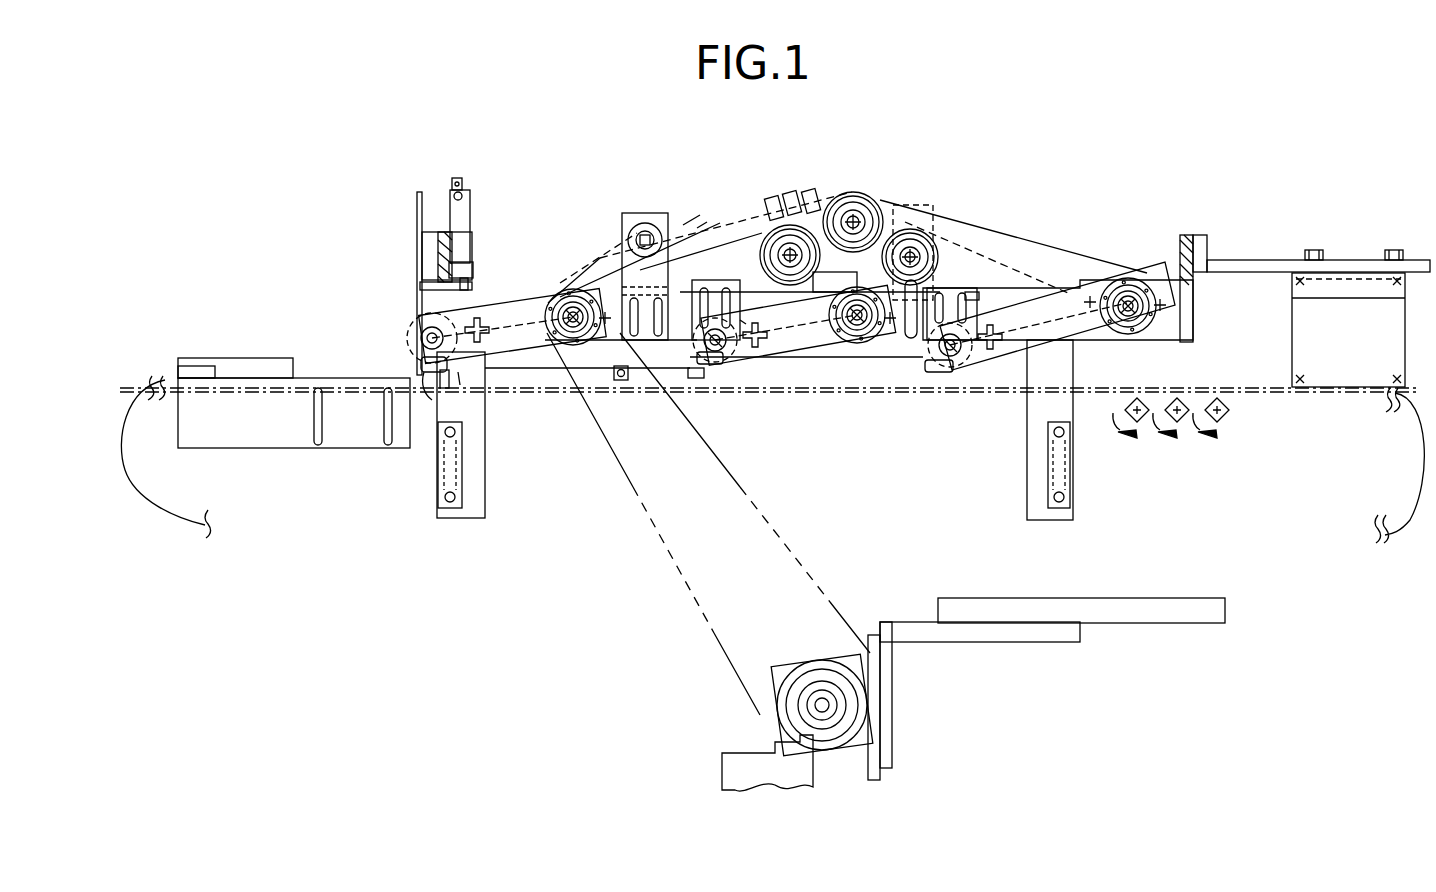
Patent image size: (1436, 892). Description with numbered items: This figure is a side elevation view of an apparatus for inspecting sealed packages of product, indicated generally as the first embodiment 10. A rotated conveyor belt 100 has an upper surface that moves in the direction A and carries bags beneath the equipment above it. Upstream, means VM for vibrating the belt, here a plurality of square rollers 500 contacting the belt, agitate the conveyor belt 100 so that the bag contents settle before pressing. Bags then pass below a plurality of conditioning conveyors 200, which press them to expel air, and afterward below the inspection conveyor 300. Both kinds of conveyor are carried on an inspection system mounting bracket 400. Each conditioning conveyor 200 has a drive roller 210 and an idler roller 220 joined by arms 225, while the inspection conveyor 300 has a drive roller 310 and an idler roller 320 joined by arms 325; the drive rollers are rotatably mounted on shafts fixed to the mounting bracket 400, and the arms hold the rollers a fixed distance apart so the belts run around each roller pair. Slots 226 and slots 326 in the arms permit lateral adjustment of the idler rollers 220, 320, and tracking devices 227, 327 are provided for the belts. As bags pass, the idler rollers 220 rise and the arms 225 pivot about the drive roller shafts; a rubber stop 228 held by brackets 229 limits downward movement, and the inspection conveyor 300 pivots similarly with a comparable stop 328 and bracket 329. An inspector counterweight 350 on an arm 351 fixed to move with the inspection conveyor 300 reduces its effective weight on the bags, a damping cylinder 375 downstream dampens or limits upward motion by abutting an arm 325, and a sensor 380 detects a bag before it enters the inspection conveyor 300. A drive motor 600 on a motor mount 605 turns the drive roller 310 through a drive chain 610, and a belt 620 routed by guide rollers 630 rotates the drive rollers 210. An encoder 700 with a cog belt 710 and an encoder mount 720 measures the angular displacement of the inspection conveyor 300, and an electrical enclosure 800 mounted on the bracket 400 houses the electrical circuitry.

The first embodiment apparatus 10 is at (842, 150).
The conveyor belt 100 is at (142, 463).
The conditioning conveyors 200 is at (770, 367).
The drive rollers 210 is at (857, 345).
The idler rollers 220 is at (697, 377).
The arms 225 is at (818, 332).
The slots 226 is at (728, 360).
The tracking devices 227 is at (745, 320).
The rubber stop 228 is at (710, 364).
The brackets 229 is at (697, 218).
The inspection conveyor 300 is at (512, 305).
The drive roller 310 is at (540, 312).
The idler roller 320 is at (412, 340).
The arms 325 is at (533, 333).
The slots 326 is at (430, 362).
The tracking devices 327 is at (458, 385).
The stop 328 is at (437, 360).
The bracket 329 is at (453, 392).
The inspector counterweight 350 is at (760, 198).
The arm 351 is at (700, 228).
The damping cylinder 375 is at (473, 205).
The sensor 380 is at (620, 381).
The inspection system mounting bracket 400 is at (478, 370).
The square rollers 500 is at (1137, 423).
The drive motor 600 is at (790, 652).
The motor mount 605 is at (930, 635).
The drive chain 610 is at (700, 580).
The belt 620 is at (1037, 247).
The guide rollers 630 is at (877, 203).
The encoder 700 is at (588, 201).
The cog belt 710 is at (600, 258).
The encoder mount 720 is at (632, 214).
The electrical enclosure 800 is at (1336, 335).
The means for vibrating the belt VM is at (1178, 470).
The direction of belt movement A is at (985, 400).